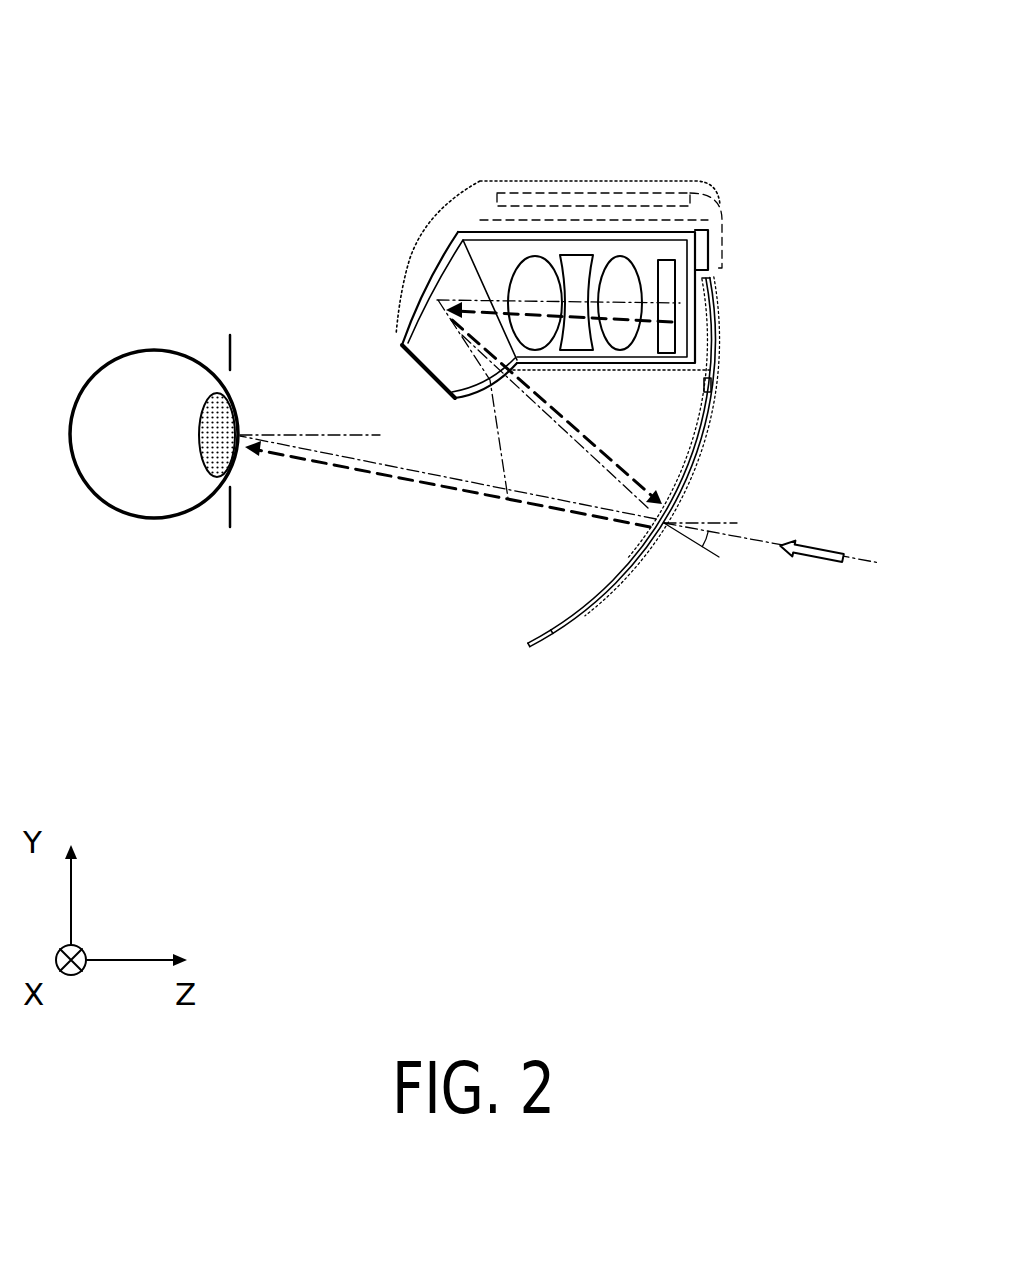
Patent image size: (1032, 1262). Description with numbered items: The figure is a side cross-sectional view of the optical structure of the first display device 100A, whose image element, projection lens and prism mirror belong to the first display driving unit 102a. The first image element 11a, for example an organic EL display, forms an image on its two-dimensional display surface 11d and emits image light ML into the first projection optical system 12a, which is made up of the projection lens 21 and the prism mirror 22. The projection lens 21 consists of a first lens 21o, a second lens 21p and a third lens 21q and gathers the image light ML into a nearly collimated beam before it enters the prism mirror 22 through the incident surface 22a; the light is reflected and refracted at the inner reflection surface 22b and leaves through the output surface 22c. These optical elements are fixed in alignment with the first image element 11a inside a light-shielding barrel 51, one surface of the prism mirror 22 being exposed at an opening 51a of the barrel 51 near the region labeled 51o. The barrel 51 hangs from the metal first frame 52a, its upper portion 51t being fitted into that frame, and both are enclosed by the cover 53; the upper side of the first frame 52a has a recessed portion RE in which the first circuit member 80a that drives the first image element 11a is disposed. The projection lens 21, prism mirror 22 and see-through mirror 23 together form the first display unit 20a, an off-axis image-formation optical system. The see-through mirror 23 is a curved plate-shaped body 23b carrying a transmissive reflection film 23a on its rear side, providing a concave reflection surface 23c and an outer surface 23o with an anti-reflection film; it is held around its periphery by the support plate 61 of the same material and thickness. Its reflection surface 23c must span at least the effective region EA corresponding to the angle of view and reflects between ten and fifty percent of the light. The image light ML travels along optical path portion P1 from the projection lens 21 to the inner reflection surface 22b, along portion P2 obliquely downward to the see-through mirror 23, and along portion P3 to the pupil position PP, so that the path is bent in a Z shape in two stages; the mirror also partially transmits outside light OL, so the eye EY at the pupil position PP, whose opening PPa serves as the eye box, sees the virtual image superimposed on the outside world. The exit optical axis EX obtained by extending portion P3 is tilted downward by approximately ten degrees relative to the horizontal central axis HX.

The first display device 100A is at (383, 147).
The first display driving unit 102a is at (773, 140).
The first projection optical system 12a is at (593, 84).
The prism mirror 22 is at (462, 235).
The incident surface 22a is at (480, 246).
The inner reflection surface 22b is at (408, 328).
The output surface 22c is at (453, 393).
The projection lens 21 is at (586, 214).
The third lens 21q is at (535, 252).
The second lens 21p is at (580, 252).
The first lens 21o is at (642, 237).
The first circuit member 80a is at (670, 193).
The recessed portion RE is at (700, 232).
The case upper portion 51t is at (703, 228).
The cover 53 is at (718, 212).
The first frame 52a is at (722, 228).
The barrel 51 is at (697, 297).
The case opening 51o is at (476, 388).
The opening 51a is at (537, 362).
The first image element 11a is at (668, 324).
The display surface 11d is at (648, 324).
The support plate 61 is at (712, 382).
The first display unit 20a is at (385, 285).
The image light ML is at (437, 298).
The pupil position PP is at (230, 337).
The opening PPa is at (233, 485).
The central axis HX is at (290, 433).
The eye EY is at (152, 518).
The see-through mirror 23 is at (692, 471).
The transmissive reflection film 23a is at (596, 594).
The plate-shaped body 23b is at (634, 580).
The reflection surface 23c is at (616, 566).
The outer surface 23o is at (593, 616).
The effective region EA is at (640, 536).
The optical path portion P1 is at (538, 396).
The optical path portion P2 is at (603, 450).
The optical path portion P3 is at (443, 488).
The outside light OL is at (807, 560).
The exit optical axis EX is at (740, 538).